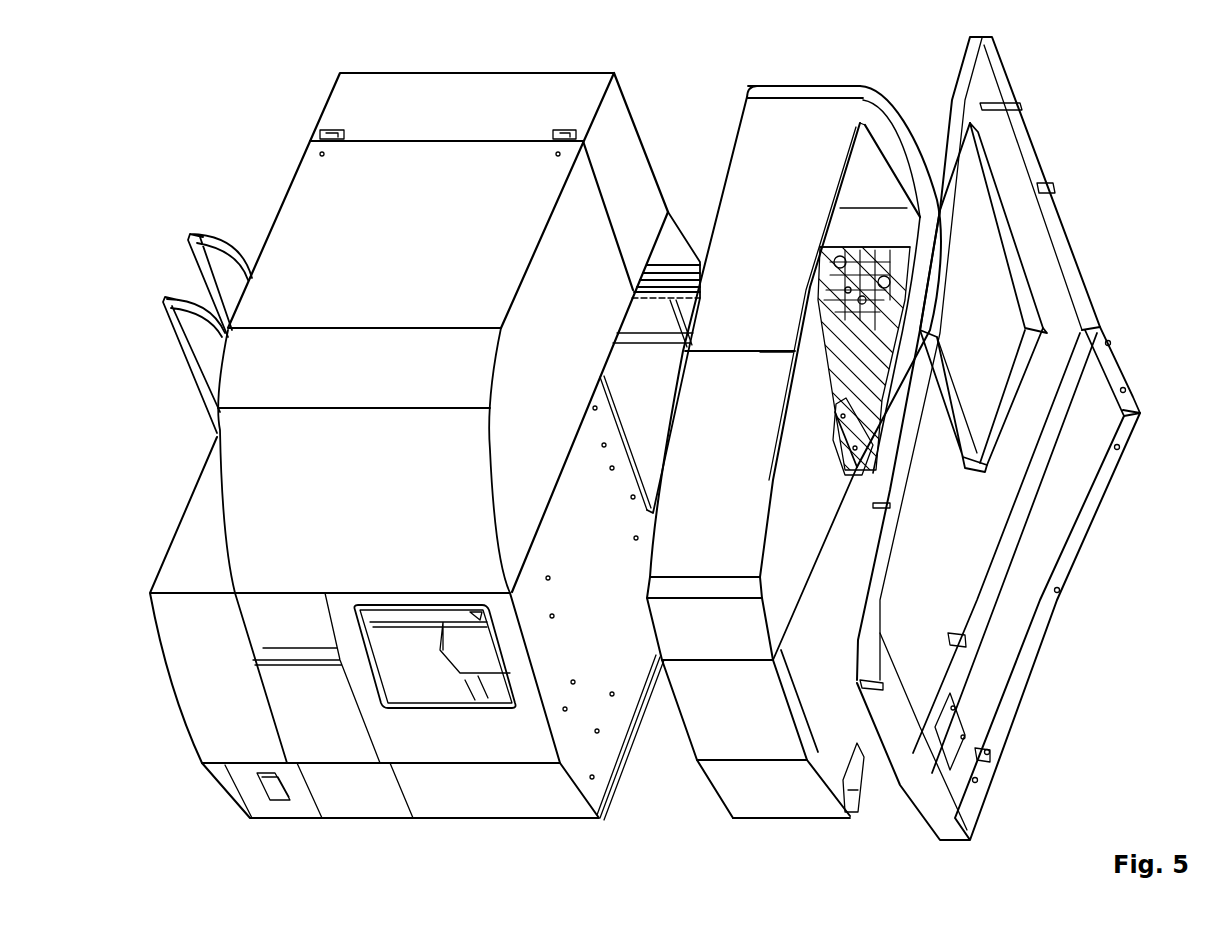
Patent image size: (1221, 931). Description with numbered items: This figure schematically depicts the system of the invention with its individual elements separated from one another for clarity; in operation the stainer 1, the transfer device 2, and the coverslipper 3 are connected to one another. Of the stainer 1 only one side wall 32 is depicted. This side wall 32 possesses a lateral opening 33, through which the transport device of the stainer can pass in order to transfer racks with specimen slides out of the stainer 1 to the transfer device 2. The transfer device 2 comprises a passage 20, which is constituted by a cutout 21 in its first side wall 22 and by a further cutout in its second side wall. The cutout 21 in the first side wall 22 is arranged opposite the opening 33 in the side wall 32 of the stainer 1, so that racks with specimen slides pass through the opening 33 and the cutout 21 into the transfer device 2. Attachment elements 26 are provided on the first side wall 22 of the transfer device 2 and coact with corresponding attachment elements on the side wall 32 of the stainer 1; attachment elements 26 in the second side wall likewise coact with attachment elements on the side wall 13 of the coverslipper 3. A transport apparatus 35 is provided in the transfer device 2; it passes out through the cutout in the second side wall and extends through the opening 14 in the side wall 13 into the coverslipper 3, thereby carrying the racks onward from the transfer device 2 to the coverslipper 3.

The stainer 1 is at (967, 95).
The transfer device 2 is at (780, 117).
The coverslipper 3 is at (514, 88).
The side wall 13 is at (613, 705).
The opening 14 is at (673, 242).
The passage 20 is at (857, 183).
The first cutout 21 is at (895, 178).
The first side wall 22 is at (882, 133).
The attachment elements 26 is at (856, 790).
The side wall 32 is at (1053, 273).
The opening 33 is at (960, 440).
The transport apparatus 35 is at (808, 330).